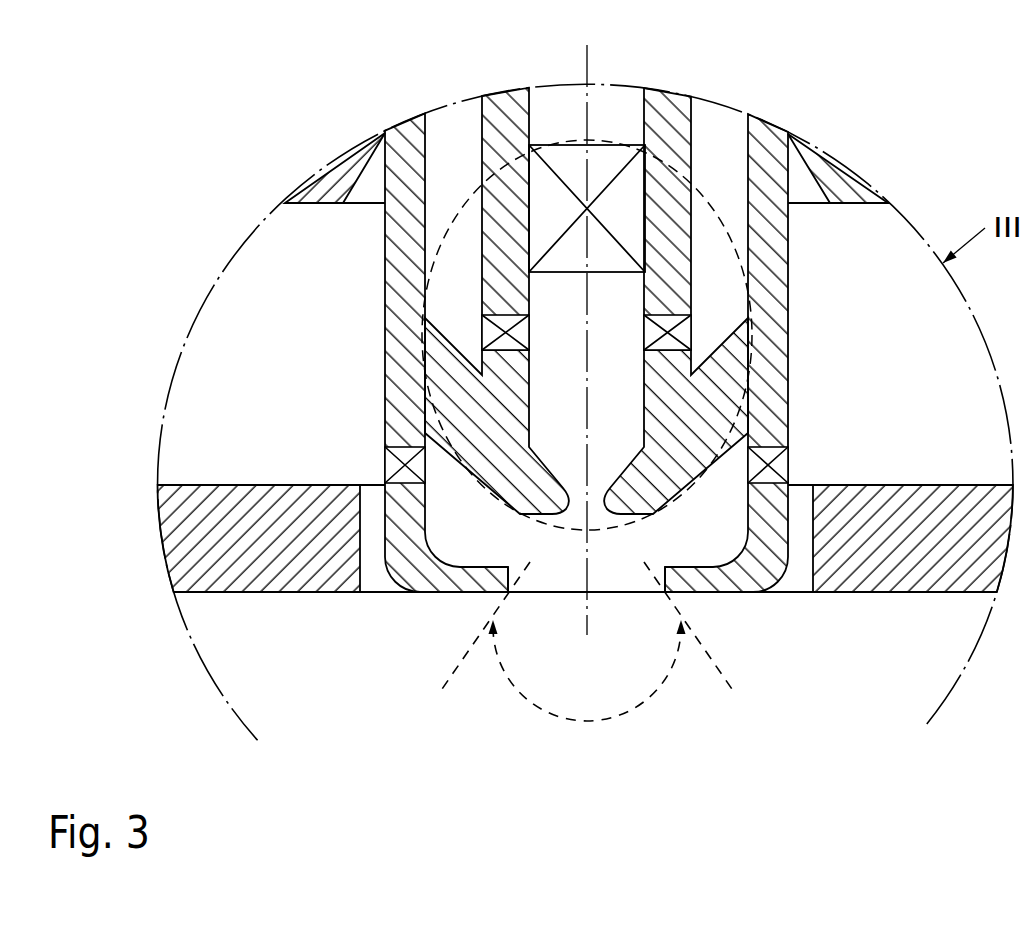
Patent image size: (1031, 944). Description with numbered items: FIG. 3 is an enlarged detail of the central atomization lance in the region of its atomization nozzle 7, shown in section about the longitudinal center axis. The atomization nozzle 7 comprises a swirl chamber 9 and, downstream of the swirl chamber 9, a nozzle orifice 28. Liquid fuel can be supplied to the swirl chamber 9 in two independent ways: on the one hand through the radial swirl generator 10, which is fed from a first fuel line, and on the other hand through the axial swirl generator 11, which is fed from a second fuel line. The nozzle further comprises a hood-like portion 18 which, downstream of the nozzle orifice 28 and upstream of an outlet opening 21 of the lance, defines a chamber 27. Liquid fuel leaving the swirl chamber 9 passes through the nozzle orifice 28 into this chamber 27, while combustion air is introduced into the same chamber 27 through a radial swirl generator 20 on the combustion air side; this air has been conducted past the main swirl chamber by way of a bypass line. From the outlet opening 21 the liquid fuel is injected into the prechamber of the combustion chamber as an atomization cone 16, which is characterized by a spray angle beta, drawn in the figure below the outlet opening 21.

The atomization nozzle 7 is at (428, 392).
The swirl chamber 9 is at (612, 425).
The radial swirl generator 10 is at (492, 332).
The axial swirl generator 11 is at (535, 192).
The atomization cone 16 is at (728, 676).
The hood-like portion 18 is at (722, 582).
The radial swirl generator on combustion air side 20 is at (392, 465).
The outlet opening 21 is at (551, 594).
The chamber 27 is at (463, 527).
The nozzle orifice 28 is at (597, 515).